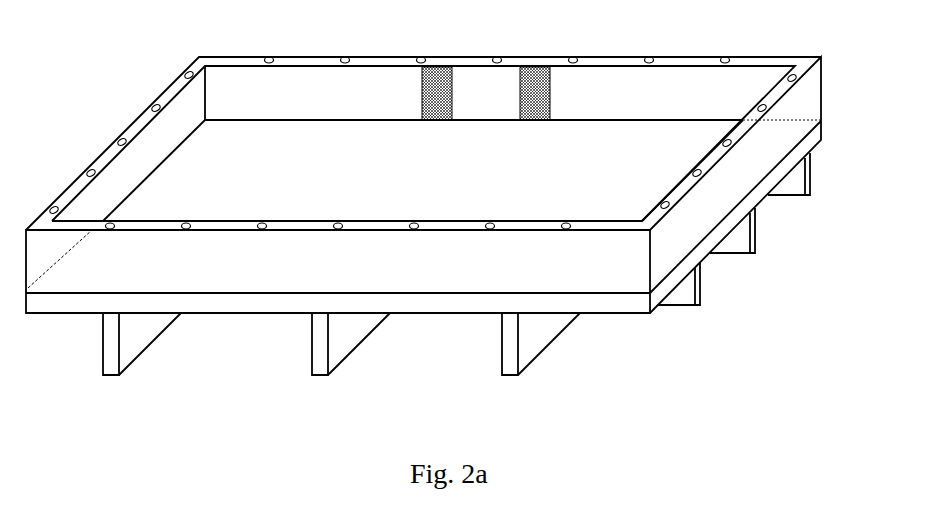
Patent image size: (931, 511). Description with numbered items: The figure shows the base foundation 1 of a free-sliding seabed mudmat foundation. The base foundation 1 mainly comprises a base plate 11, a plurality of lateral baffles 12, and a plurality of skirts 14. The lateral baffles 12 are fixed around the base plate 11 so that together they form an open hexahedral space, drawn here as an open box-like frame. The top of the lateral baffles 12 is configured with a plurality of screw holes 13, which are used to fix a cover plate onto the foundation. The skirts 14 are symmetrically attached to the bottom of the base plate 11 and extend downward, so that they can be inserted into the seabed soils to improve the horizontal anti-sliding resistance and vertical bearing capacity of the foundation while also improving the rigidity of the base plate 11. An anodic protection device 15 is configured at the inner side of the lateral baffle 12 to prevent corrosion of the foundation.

The base foundation 1 is at (100, 128).
The base plate 11 is at (762, 203).
The lateral baffles 12 is at (703, 55).
The screw holes 13 is at (277, 60).
The skirts 14 is at (730, 257).
The anodic protection device 15 is at (453, 90).